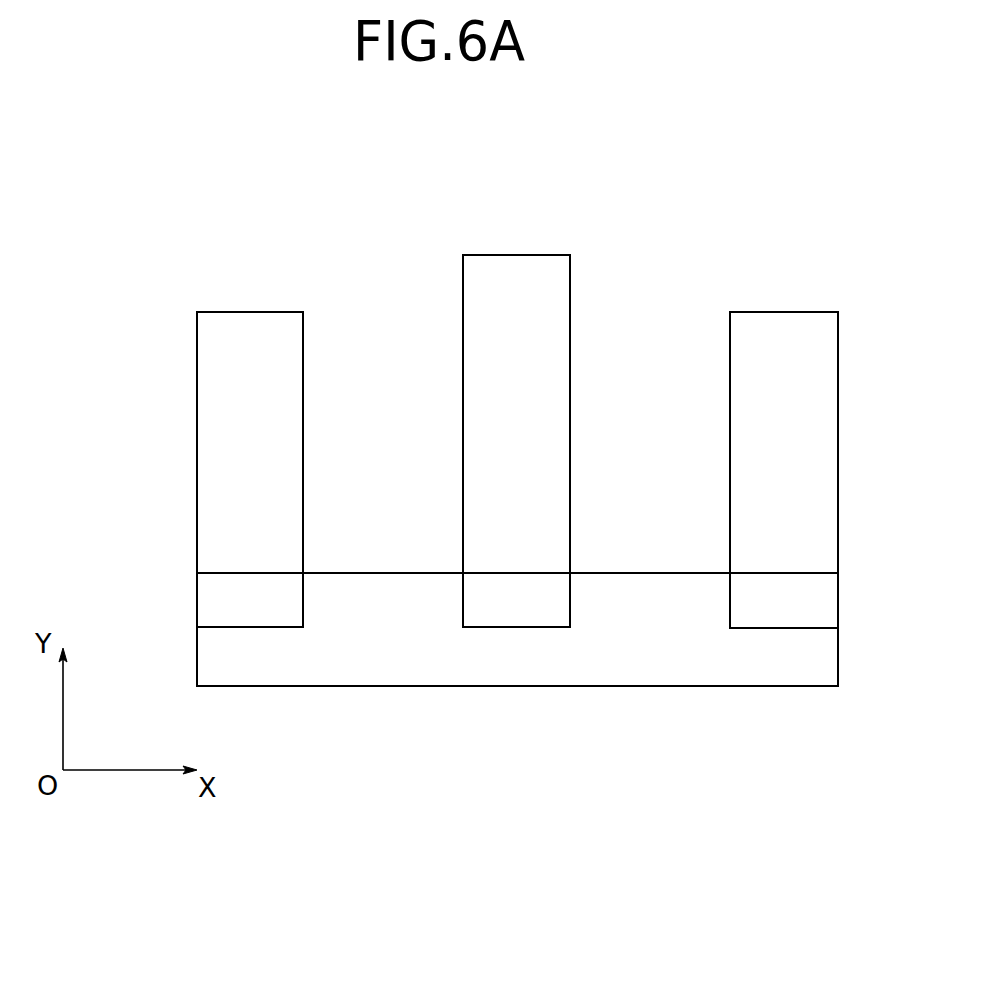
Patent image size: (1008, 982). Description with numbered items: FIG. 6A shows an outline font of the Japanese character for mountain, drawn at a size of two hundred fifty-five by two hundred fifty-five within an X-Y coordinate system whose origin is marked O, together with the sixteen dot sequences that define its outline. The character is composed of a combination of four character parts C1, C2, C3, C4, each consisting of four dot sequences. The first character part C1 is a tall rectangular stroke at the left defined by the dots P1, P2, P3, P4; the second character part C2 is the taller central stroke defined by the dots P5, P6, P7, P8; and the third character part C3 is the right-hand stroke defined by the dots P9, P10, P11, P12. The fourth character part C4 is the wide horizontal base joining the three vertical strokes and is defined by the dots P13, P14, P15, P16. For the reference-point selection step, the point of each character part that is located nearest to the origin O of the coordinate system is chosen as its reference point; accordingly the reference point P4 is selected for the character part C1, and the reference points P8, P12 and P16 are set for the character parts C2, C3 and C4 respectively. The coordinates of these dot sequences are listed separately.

The dot sequence point P1 is at (196, 304).
The dot sequence point P2 is at (304, 304).
The dot sequence point P3 is at (315, 628).
The dot sequence point P4 is at (183, 625).
The dot sequence point P5 is at (466, 245).
The dot sequence point P6 is at (569, 245).
The dot sequence point P7 is at (569, 636).
The dot sequence point P8 is at (462, 636).
The dot sequence point P9 is at (730, 304).
The dot sequence point P10 is at (840, 304).
The dot sequence point P11 is at (859, 628).
The dot sequence point P12 is at (725, 637).
The dot sequence point P13 is at (177, 573).
The dot sequence point P14 is at (859, 573).
The dot sequence point P15 is at (850, 697).
The dot sequence point P16 is at (187, 693).
The character part C1 is at (250, 469).
The character part C2 is at (516, 441).
The character part C3 is at (784, 470).
The character part C4 is at (517, 629).